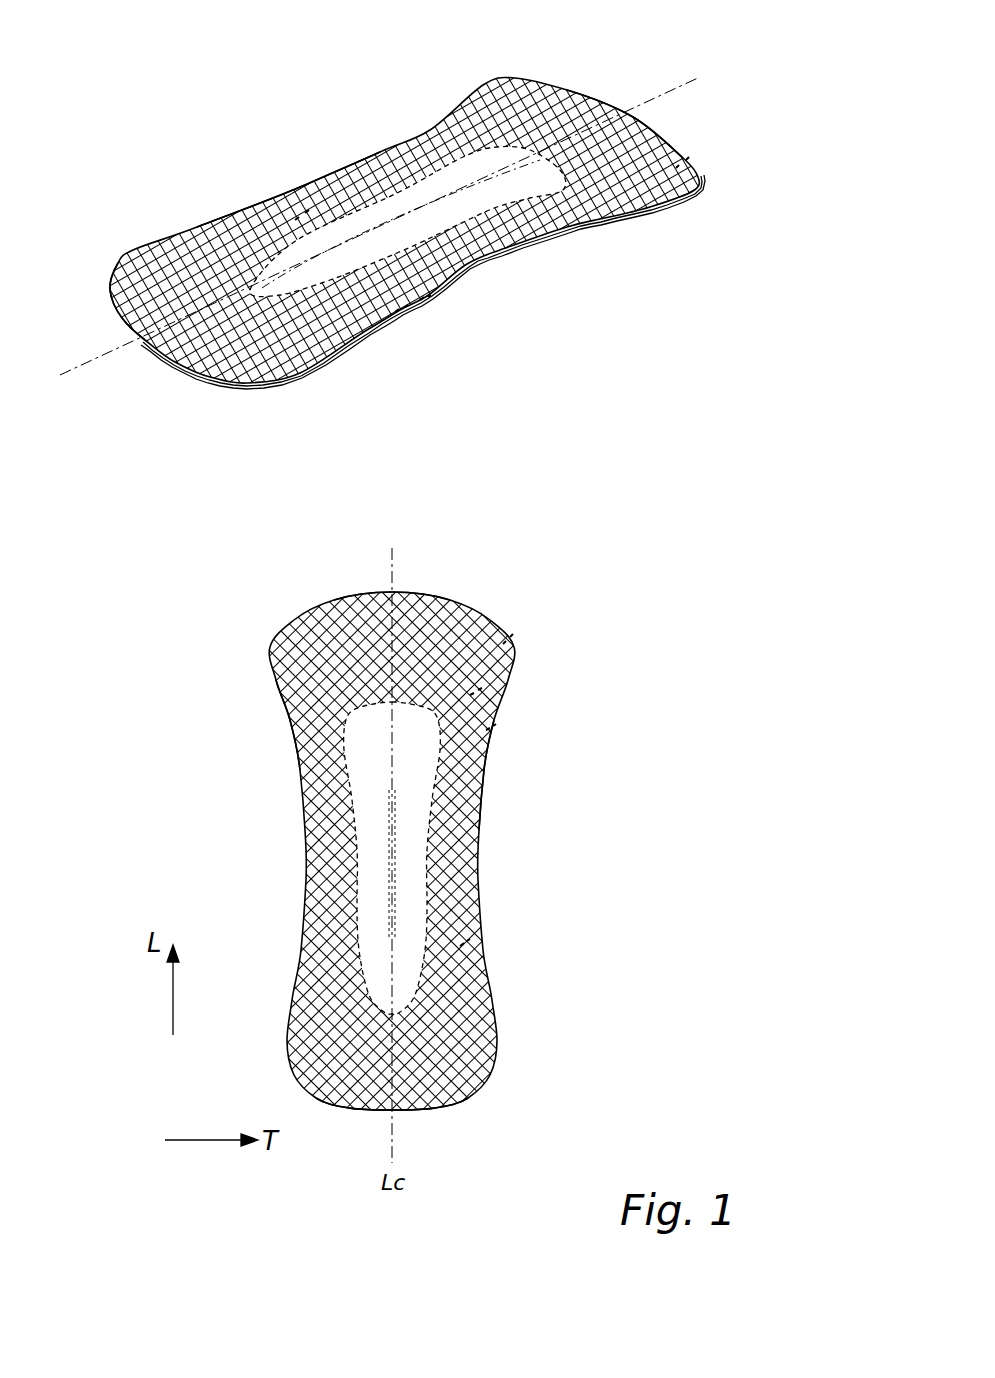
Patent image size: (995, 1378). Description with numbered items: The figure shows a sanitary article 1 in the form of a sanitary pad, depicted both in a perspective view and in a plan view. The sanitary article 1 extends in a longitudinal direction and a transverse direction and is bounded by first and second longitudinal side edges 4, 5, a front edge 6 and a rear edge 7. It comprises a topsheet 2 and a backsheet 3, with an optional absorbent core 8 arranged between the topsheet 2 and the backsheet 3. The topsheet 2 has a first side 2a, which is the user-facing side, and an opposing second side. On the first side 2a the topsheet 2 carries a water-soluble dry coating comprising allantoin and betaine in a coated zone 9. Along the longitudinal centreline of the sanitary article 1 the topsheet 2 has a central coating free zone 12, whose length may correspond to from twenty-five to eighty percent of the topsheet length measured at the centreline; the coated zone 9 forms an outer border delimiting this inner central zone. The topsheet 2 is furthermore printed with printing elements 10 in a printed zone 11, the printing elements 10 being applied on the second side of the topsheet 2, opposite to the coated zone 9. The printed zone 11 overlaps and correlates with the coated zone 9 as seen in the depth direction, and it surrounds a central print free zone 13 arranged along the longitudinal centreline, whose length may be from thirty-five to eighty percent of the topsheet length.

The sanitary article 1 is at (573, 250).
The topsheet 2 is at (645, 192).
The first side of the topsheet 2a is at (553, 120).
The backsheet 3 is at (257, 390).
The first longitudinal side edge 4 is at (472, 270).
The second longitudinal side edge 5 is at (347, 170).
The front edge 6 is at (645, 120).
The rear edge 7 is at (142, 345).
The absorbent core 8 is at (685, 160).
The coated zone 9 is at (300, 217).
The printing elements 10 is at (425, 303).
The printed zone 11 is at (400, 313).
The central coating free zone 12 is at (413, 233).
The central print free zone 13 is at (435, 212).